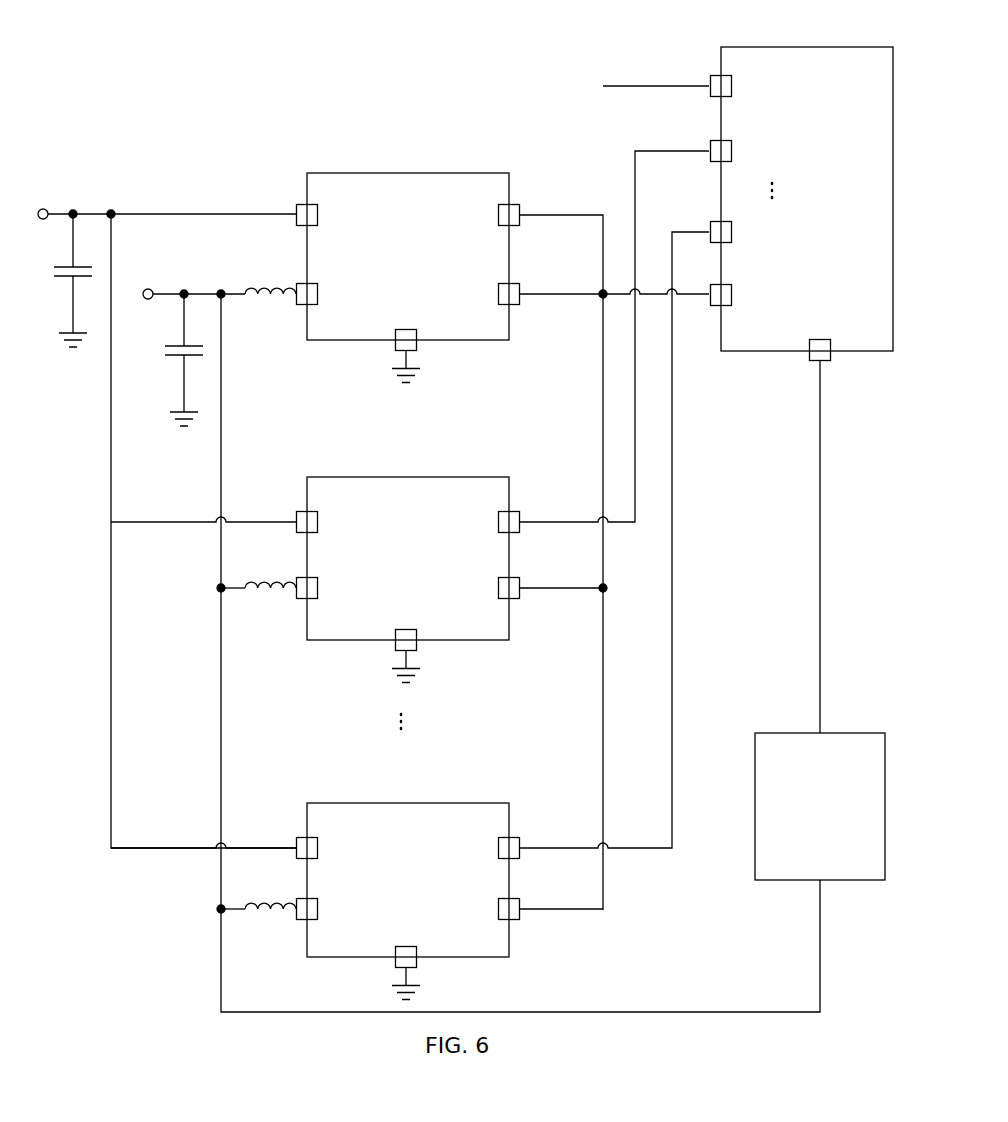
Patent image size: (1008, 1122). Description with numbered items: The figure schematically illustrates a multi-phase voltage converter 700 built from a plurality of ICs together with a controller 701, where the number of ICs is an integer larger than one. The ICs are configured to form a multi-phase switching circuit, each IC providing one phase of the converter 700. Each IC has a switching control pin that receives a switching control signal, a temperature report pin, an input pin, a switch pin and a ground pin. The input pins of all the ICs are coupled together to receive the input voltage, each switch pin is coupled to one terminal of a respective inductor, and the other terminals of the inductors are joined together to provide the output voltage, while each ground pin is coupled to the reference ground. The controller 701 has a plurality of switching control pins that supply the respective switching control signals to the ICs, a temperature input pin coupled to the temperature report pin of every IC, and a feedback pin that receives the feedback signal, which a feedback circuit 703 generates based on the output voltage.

The multi-phase voltage converter 700 is at (234, 58).
The controller 701 is at (795, 47).
The feedback circuit 703 is at (850, 733).